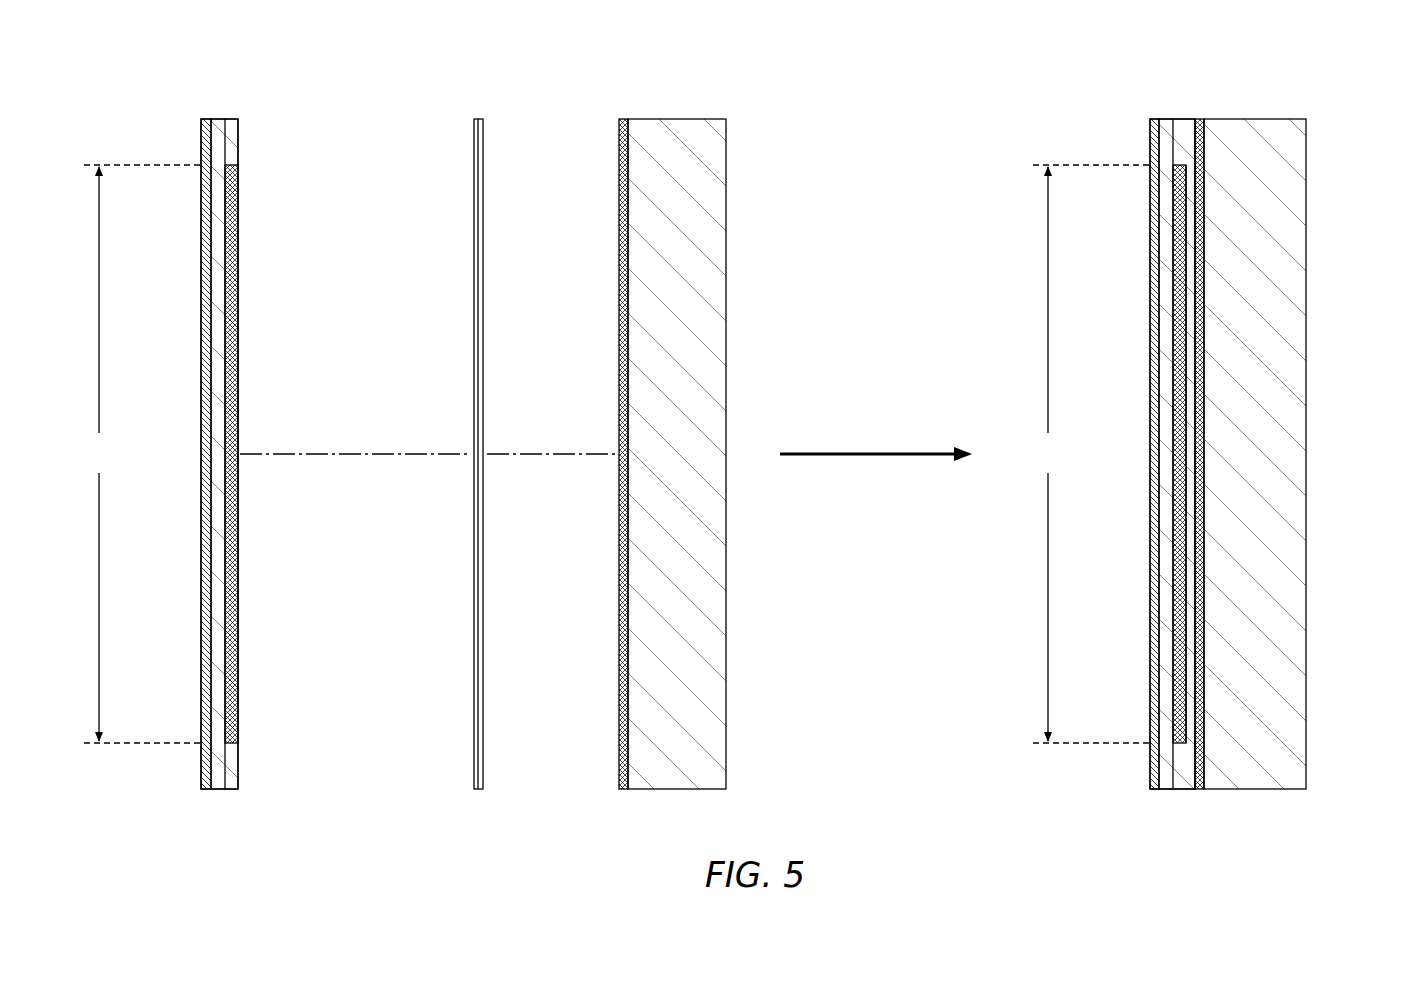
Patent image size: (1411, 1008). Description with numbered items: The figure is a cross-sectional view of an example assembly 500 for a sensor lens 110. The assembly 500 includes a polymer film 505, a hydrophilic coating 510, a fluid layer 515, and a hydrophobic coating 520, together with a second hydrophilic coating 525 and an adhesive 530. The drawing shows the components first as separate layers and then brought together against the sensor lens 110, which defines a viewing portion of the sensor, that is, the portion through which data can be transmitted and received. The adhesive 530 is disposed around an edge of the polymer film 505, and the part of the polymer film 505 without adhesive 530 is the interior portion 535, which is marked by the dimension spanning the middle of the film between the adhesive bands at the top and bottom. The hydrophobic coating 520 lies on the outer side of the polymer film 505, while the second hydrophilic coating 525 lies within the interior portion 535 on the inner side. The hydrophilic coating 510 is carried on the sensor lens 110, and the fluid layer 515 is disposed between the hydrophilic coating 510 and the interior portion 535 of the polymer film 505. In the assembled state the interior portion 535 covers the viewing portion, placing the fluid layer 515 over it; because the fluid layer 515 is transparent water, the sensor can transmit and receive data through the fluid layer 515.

The assembly 500 is at (131, 88).
The polymer film 505 is at (217, 118).
The hydrophilic coating 510 is at (618, 238).
The fluid layer 515 is at (473, 238).
The hydrophobic coating 520 is at (200, 237).
The second hydrophilic coating 525 is at (240, 340).
The adhesive 530 is at (239, 140).
The interior portion 535 is at (615, 454).
The sensor lens 110 is at (727, 172).